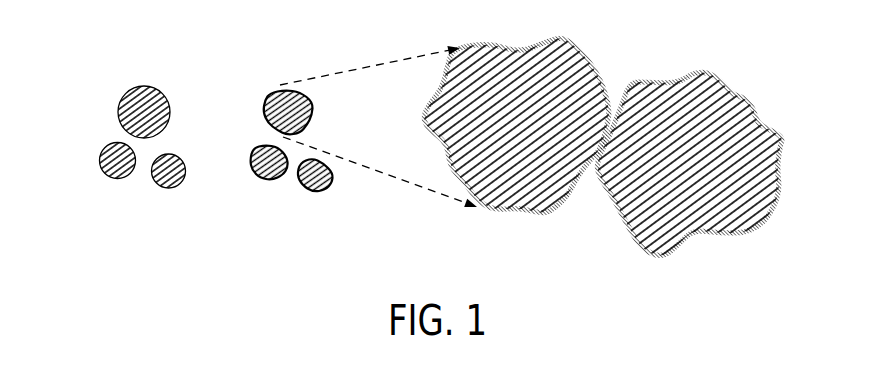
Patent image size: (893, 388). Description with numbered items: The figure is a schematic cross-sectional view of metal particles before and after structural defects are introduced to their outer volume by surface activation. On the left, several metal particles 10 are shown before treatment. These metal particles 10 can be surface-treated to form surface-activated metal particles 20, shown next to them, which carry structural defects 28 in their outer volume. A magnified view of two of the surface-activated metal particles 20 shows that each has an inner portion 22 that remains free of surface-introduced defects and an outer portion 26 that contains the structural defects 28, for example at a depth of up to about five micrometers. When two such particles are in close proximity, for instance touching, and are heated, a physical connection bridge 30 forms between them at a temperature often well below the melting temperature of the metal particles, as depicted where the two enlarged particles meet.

The metal particles 10 is at (118, 68).
The surface-activated metal particles 20 is at (265, 70).
The inner portion 22 is at (687, 100).
The outer portion 26 is at (692, 238).
The structural defects 28 is at (738, 80).
The connection bridge 30 is at (592, 168).